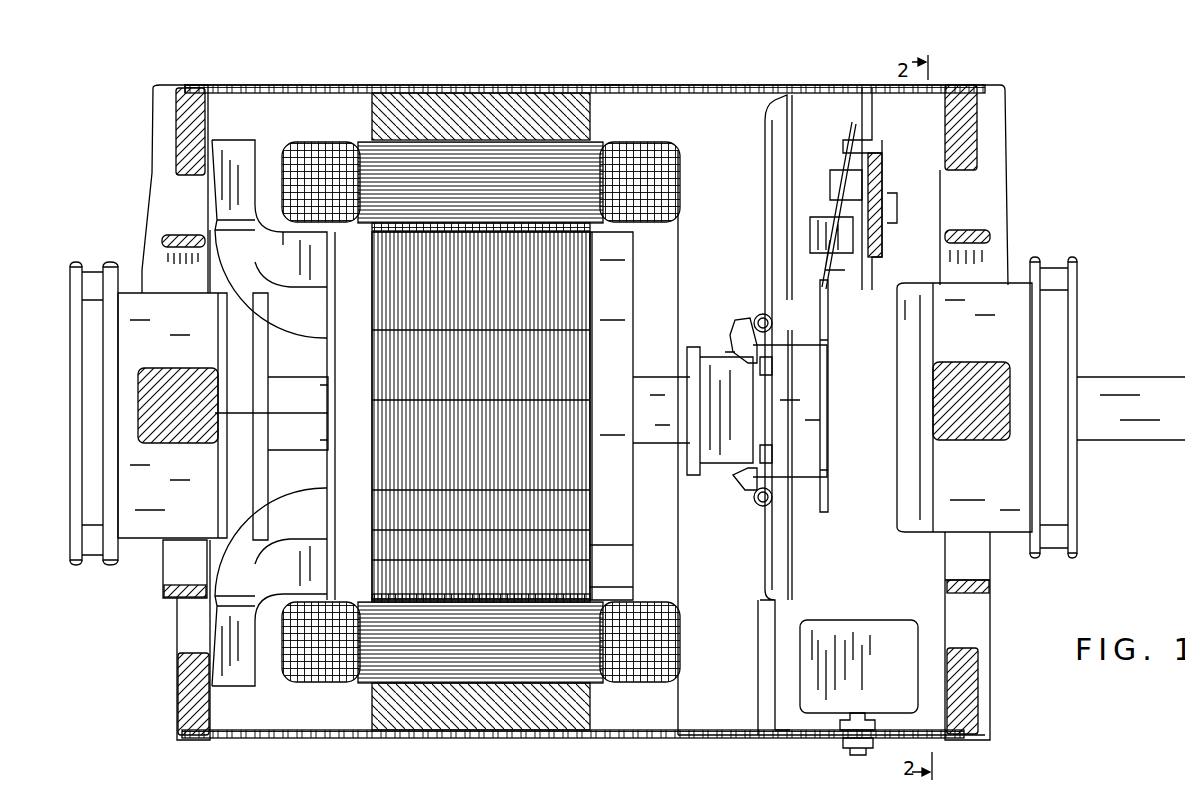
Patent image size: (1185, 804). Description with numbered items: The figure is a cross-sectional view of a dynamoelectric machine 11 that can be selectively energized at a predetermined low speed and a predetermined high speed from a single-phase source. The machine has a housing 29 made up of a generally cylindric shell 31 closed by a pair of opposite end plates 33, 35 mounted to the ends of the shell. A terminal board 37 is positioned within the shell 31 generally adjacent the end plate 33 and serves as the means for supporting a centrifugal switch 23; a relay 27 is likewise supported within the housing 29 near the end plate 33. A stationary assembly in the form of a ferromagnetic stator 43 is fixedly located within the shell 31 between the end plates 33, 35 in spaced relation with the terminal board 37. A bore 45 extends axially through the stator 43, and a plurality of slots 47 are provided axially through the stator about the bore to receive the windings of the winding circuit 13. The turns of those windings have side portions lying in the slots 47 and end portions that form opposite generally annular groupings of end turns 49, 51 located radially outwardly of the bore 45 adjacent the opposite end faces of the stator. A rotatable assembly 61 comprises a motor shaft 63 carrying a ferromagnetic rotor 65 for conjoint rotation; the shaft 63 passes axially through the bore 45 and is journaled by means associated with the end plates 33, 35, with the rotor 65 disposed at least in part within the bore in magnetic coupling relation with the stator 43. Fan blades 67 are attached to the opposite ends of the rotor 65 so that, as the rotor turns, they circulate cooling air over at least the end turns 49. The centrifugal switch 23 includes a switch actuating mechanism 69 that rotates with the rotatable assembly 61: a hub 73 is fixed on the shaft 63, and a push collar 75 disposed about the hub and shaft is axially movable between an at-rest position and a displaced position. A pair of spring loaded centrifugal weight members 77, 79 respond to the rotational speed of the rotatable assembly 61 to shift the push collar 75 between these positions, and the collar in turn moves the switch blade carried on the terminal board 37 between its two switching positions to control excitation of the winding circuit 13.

The dynamoelectric machine 11 is at (1093, 128).
The winding circuit 13 is at (488, 196).
The centrifugal switch 23 is at (832, 168).
The relay 27 is at (894, 686).
The housing 29 is at (356, 73).
The shell 31 is at (618, 83).
The end plate 33 is at (990, 125).
The end plate 35 is at (160, 125).
The terminal board 37 is at (880, 100).
The stator 43 is at (488, 124).
The bore 45 is at (458, 245).
The slots 47 is at (548, 142).
The end turns 49 is at (318, 146).
The end turns 51 is at (681, 165).
The rotatable assembly 61 is at (650, 550).
The motor shaft 63 is at (665, 382).
The rotor 65 is at (496, 370).
The fan blades 67 is at (318, 556).
The switch actuating mechanism 69 is at (762, 399).
The hub 73 is at (712, 478).
The push collar 75 is at (812, 512).
The centrifugal weight member 77 is at (738, 325).
The centrifugal weight member 79 is at (748, 492).